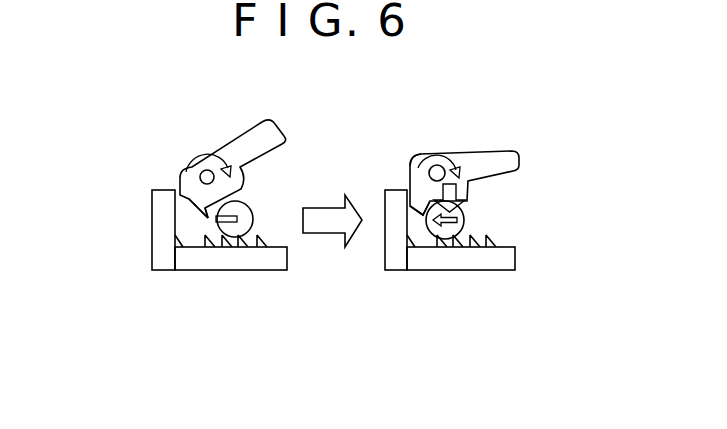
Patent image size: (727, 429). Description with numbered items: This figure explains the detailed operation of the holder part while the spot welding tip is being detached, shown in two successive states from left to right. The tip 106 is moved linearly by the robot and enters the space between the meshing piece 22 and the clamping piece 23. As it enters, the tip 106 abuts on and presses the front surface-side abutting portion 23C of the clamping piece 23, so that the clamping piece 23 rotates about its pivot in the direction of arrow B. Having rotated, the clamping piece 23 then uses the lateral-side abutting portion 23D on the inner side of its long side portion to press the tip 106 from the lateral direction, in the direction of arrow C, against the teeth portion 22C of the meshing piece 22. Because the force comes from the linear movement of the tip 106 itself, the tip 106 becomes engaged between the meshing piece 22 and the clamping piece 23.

The meshing piece 22 is at (213, 263).
The teeth portion 22C is at (257, 237).
The clamping piece 23 is at (242, 147).
The front surface-side abutting portion 23C is at (215, 213).
The lateral-side abutting portion 23D is at (462, 202).
The tip 106 is at (237, 208).
The arrow B is at (432, 157).
The arrow C is at (413, 165).